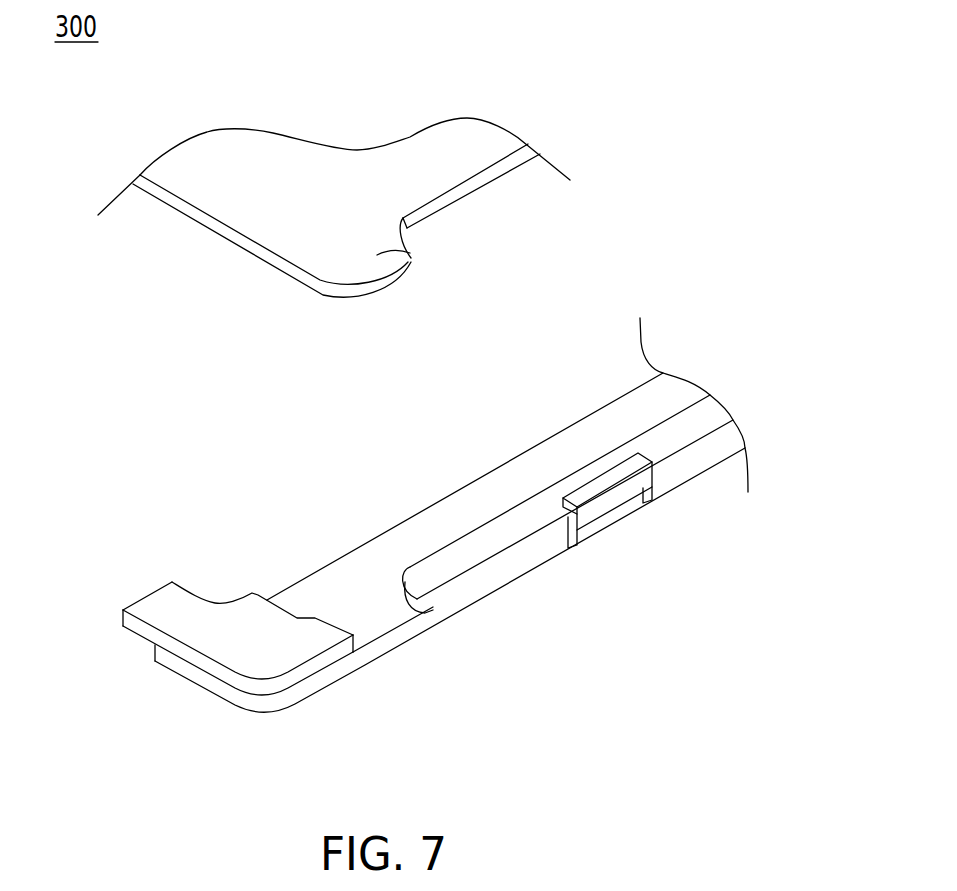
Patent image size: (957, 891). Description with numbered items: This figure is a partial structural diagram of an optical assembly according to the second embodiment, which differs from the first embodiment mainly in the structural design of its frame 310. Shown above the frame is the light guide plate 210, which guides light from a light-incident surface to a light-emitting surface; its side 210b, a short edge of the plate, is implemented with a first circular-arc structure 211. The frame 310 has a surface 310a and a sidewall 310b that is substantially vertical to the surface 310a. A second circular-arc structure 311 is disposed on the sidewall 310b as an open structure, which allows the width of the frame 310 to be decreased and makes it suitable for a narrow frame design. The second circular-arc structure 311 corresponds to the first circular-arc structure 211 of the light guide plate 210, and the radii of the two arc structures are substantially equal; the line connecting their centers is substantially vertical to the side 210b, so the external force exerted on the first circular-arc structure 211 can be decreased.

The light guide plate 210 is at (373, 185).
The side of light guide plate 210b is at (473, 183).
The first circular-arc structure 211 is at (410, 253).
The frame 310 is at (462, 515).
The surface of frame 310a is at (348, 580).
The sidewall of frame 310b is at (463, 558).
The second circular-arc structure 311 is at (403, 626).